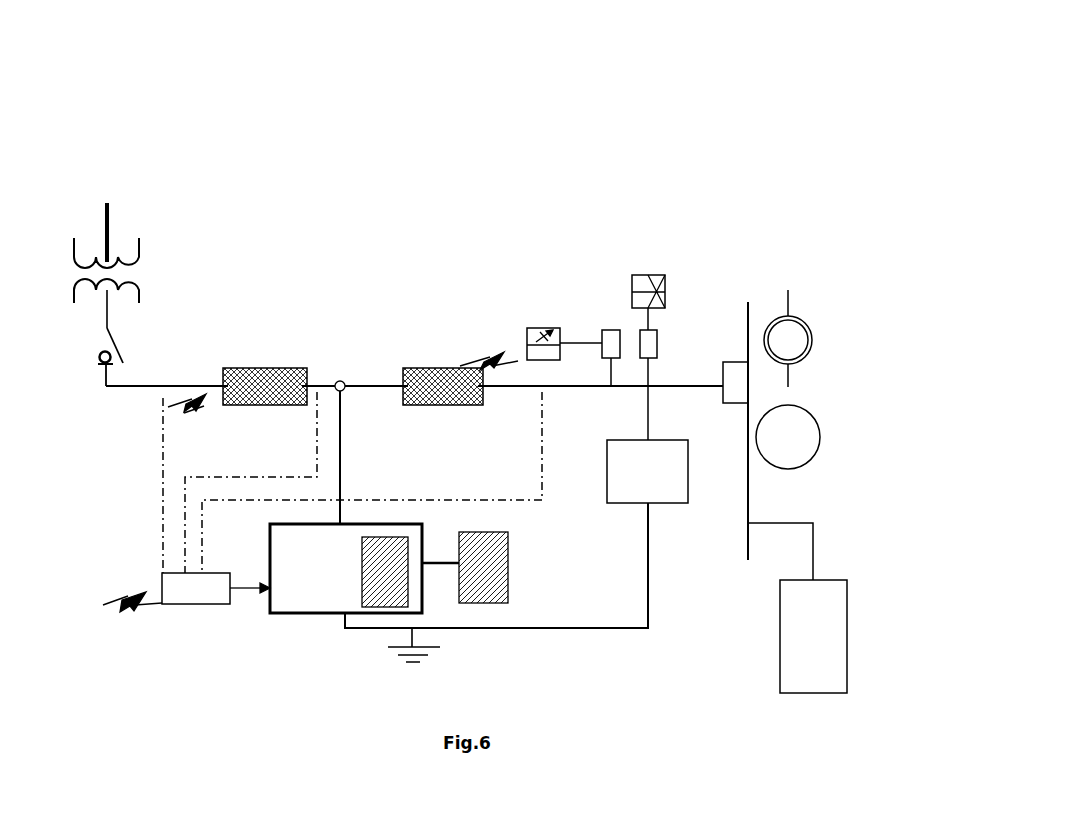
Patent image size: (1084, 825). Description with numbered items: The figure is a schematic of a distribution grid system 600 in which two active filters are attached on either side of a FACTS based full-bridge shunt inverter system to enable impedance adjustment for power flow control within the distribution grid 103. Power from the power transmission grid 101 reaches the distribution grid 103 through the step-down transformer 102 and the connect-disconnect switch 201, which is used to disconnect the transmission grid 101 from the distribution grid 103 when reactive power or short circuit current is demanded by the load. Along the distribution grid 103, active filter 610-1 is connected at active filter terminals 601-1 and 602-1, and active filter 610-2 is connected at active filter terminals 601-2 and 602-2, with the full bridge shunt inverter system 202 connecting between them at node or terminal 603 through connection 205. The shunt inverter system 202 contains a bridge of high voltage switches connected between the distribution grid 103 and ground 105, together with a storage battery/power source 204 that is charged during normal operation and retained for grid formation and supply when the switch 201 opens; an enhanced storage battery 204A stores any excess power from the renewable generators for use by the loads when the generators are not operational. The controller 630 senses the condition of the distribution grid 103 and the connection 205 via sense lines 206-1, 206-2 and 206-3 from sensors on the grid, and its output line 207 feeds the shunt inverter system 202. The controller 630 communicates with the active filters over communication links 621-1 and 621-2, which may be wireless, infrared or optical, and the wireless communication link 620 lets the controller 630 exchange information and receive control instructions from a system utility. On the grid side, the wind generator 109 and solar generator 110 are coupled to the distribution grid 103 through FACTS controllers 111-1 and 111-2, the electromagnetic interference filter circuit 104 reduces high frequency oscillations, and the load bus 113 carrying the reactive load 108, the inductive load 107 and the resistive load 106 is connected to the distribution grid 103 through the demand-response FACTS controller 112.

The distribution grid system 600 is at (532, 96).
The power transmission grid 101 is at (110, 215).
The step-down transformer 102 is at (138, 270).
The connect-disconnect switch 201 is at (123, 362).
The distribution grid 103 is at (160, 388).
The active filter terminal 601-1 is at (223, 385).
The active filter 610-1 is at (265, 368).
The active filter terminal 602-1 is at (308, 385).
The node or terminal 603 is at (346, 390).
The active filter terminal 601-2 is at (403, 386).
The active filter 610-2 is at (447, 368).
The active filter terminal 602-2 is at (487, 390).
The communication link 621-1 is at (197, 413).
The communication link 621-2 is at (498, 353).
The sense line 206-1 is at (162, 468).
The sense line 206-2 is at (313, 440).
The sense line 206-3 is at (203, 533).
The connection 205 is at (342, 470).
The full bridge shunt inverter system 202 is at (297, 613).
The storage battery/power source 204 is at (378, 537).
The enhanced storage battery 204A is at (508, 550).
The controller 630 is at (185, 605).
The signal line 207 is at (253, 590).
The wireless communication link 620 is at (138, 594).
The ground 105 is at (420, 647).
The generator 109 is at (542, 327).
The FACTS controller 111-1 is at (604, 358).
The generator 110 is at (640, 275).
The FACTS controller 111-2 is at (657, 345).
The electromagnetic interference filter circuit 104 is at (688, 480).
The demand-response FACTS controller 112 is at (727, 403).
The load bus 113 is at (748, 560).
The reactive load 108 is at (812, 338).
The inductive load 107 is at (822, 450).
The resistive load 106 is at (847, 633).